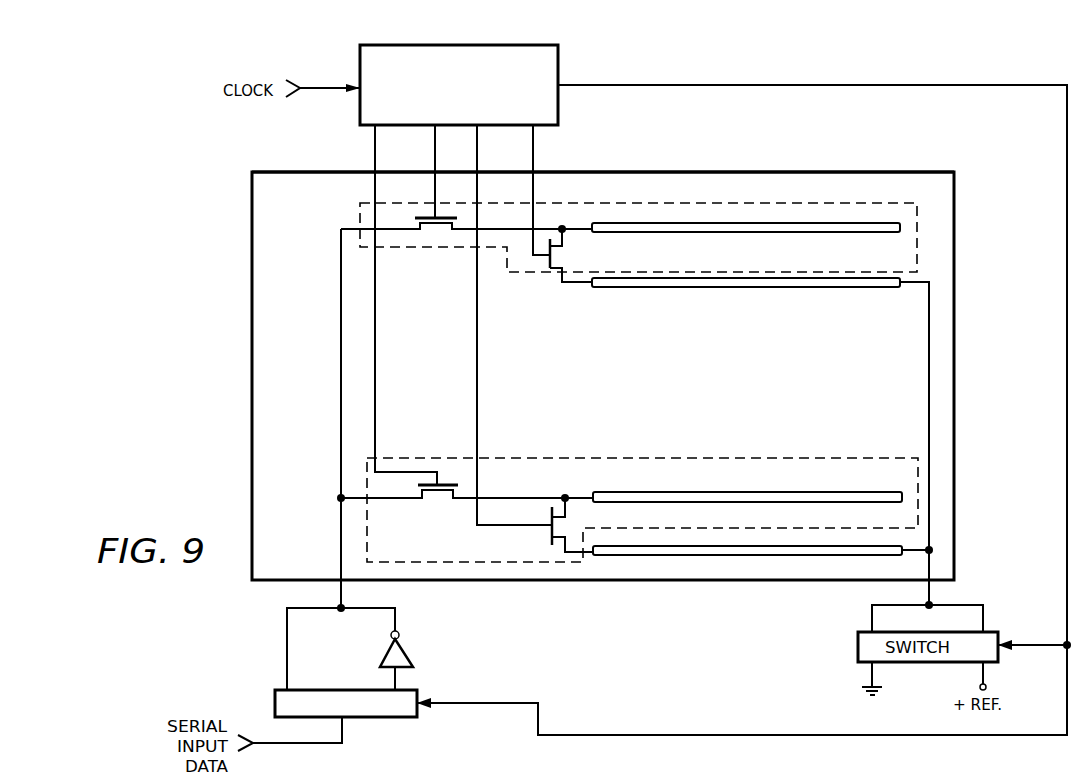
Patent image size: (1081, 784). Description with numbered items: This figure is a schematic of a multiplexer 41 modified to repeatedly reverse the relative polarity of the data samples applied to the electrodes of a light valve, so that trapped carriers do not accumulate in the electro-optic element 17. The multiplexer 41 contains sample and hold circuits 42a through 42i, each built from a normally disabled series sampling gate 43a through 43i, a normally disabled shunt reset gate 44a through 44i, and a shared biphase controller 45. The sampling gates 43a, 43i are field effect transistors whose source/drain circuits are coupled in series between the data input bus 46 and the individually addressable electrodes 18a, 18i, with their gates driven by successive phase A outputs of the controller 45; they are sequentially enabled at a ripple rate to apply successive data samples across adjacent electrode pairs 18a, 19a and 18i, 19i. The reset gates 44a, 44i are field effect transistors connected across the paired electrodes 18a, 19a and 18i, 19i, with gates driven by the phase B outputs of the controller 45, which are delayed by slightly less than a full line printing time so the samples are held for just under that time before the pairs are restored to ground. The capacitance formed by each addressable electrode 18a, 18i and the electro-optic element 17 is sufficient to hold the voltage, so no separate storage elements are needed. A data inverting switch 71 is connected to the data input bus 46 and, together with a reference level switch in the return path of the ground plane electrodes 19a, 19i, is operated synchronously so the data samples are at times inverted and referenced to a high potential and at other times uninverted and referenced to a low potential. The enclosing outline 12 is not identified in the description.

The capacitive touch array / display panel 12 is at (869, 157).
The electro-optic element 17 is at (668, 172).
The individually addressable electrode 18a is at (713, 231).
The ground plane electrode 19a is at (700, 288).
The individually addressable electrode 18i is at (686, 472).
The ground plane electrode 19i is at (685, 557).
The multiplexer 41 is at (326, 367).
The sample and hold circuit 42a is at (567, 223).
The sample and hold circuit 42i is at (811, 457).
The series sampling gate 43a is at (430, 219).
The shunt reset gate 44a is at (546, 270).
The series sampling gate 43i is at (441, 484).
The shunt reset gate 44i is at (551, 528).
The biphase controller 45 is at (559, 72).
The data input bus 46 is at (341, 558).
The data inverting switch 71 is at (321, 690).